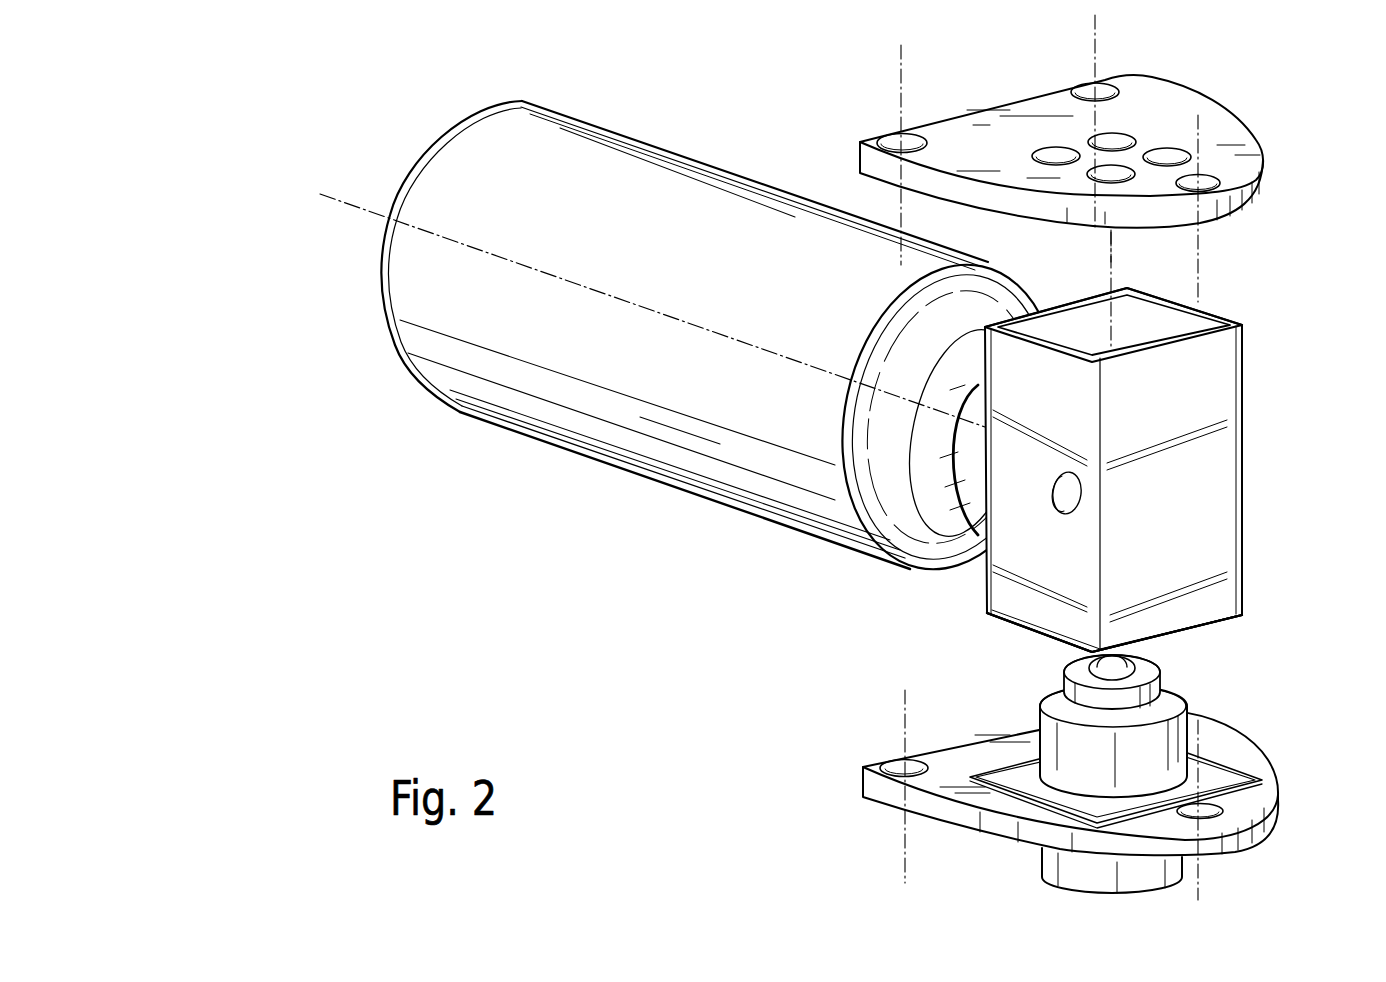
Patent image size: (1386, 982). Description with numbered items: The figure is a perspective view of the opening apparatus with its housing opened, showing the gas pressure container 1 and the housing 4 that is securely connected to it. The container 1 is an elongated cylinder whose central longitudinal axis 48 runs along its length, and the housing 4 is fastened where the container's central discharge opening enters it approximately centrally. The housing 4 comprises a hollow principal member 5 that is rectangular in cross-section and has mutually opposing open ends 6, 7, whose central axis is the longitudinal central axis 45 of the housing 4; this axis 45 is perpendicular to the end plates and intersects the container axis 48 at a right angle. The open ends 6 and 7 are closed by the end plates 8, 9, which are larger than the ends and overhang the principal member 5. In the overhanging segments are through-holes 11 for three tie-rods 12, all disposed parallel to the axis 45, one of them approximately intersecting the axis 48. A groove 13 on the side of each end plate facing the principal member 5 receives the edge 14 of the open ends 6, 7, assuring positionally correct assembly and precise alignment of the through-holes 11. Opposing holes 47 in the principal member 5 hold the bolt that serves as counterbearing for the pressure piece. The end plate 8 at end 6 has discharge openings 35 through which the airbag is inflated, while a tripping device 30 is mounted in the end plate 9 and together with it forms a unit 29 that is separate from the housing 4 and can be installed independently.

The pressure container 1 is at (553, 410).
The housing 4 is at (1143, 445).
The principal member 5 is at (1220, 517).
The open end 6 is at (1148, 322).
The open end 7 is at (1013, 632).
The end plate 8 is at (1257, 130).
The end plate 9 is at (1222, 744).
The through-holes 11 is at (910, 137).
The tie-rods 12 is at (895, 66).
The groove 13 is at (1240, 772).
The edge 14 is at (1212, 312).
The unit 29 is at (1091, 763).
The tripping device 30 is at (1180, 727).
The discharge openings 35 is at (1058, 148).
The longitudinal central axis 45 is at (1108, 258).
The holes 47 is at (1062, 500).
The central longitudinal axis 48 is at (345, 213).